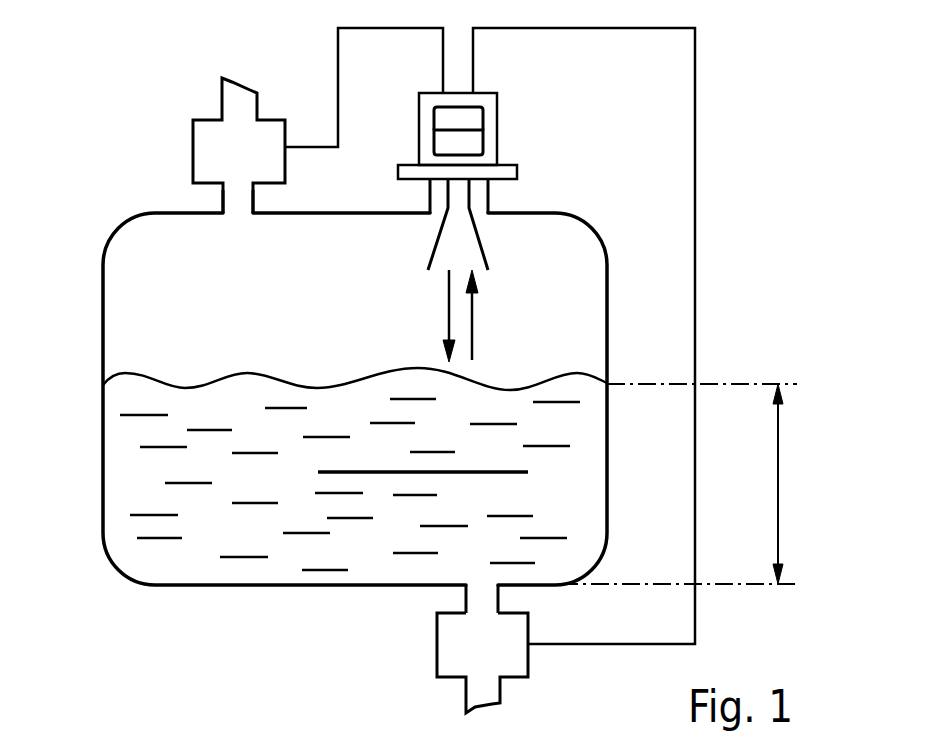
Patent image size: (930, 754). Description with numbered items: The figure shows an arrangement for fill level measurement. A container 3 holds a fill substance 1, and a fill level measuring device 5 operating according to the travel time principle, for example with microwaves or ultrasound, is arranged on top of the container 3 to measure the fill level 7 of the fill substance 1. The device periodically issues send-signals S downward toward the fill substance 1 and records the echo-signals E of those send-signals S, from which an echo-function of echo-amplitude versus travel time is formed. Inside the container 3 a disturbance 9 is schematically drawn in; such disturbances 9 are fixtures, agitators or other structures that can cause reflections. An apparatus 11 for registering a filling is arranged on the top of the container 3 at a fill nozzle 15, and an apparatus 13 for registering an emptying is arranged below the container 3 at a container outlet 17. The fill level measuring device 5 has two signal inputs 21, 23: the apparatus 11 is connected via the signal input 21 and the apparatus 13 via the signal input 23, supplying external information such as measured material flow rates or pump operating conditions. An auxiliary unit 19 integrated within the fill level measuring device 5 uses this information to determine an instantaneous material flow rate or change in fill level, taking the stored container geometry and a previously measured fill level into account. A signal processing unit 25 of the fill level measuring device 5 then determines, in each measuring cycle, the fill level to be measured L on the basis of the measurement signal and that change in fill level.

The fill substance 1 is at (122, 468).
The container 3 is at (103, 292).
The fill level measuring device 5 is at (487, 138).
The fill level 7 is at (140, 372).
The disturbance 9 is at (493, 474).
The apparatus for registering a filling 11 is at (207, 148).
The apparatus for registering an emptying 13 is at (467, 645).
The fill nozzle 15 is at (233, 204).
The container outlet 17 is at (465, 600).
The auxiliary unit 19 is at (445, 119).
The signal input 21 is at (442, 92).
The signal input 23 is at (473, 92).
The signal processing unit 25 is at (445, 145).
The send-signal S is at (445, 315).
The echo-signal E is at (470, 318).
The fill level to be measured L is at (778, 455).